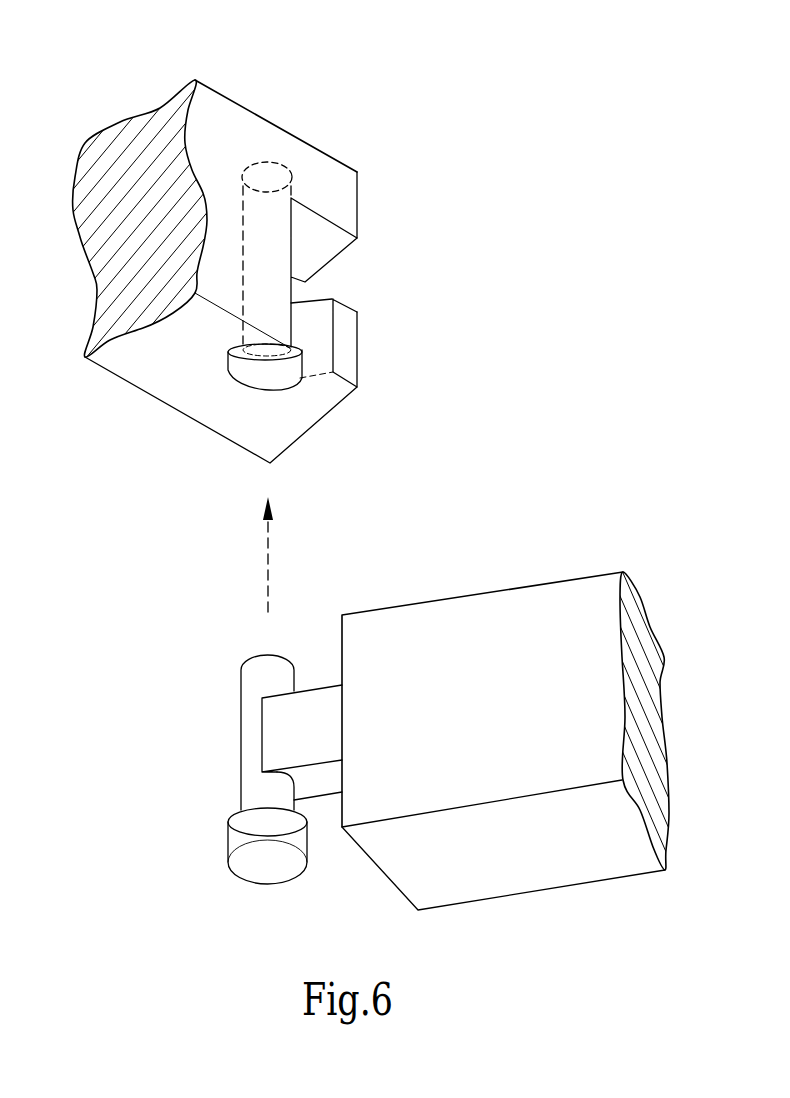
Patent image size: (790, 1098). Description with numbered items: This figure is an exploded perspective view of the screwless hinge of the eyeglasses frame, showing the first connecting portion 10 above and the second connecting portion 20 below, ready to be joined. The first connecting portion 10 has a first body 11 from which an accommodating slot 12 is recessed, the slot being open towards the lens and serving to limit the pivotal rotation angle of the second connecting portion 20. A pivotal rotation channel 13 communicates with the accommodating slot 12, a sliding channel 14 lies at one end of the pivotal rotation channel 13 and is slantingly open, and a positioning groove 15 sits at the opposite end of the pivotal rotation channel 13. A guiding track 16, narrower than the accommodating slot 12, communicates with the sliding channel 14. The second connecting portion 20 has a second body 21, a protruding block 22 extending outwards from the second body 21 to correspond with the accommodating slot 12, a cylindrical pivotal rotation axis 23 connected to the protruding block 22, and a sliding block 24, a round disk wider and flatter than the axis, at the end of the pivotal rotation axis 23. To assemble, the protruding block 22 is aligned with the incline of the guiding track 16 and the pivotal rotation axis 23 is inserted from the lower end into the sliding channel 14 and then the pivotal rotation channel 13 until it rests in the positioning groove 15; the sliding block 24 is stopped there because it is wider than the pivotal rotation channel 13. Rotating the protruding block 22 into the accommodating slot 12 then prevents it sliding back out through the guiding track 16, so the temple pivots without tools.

The first connecting portion 10 is at (150, 397).
The first body 11 is at (232, 135).
The accommodating slot 12 is at (335, 280).
The pivotal rotation channel 13 is at (242, 253).
The sliding channel 14 is at (271, 376).
The positioning groove 15 is at (273, 177).
The guiding track 16 is at (320, 345).
The second connecting portion 20 is at (484, 580).
The second body 21 is at (448, 647).
The protruding block 22 is at (318, 723).
The pivotal rotation axis 23 is at (258, 677).
The sliding block 24 is at (240, 833).